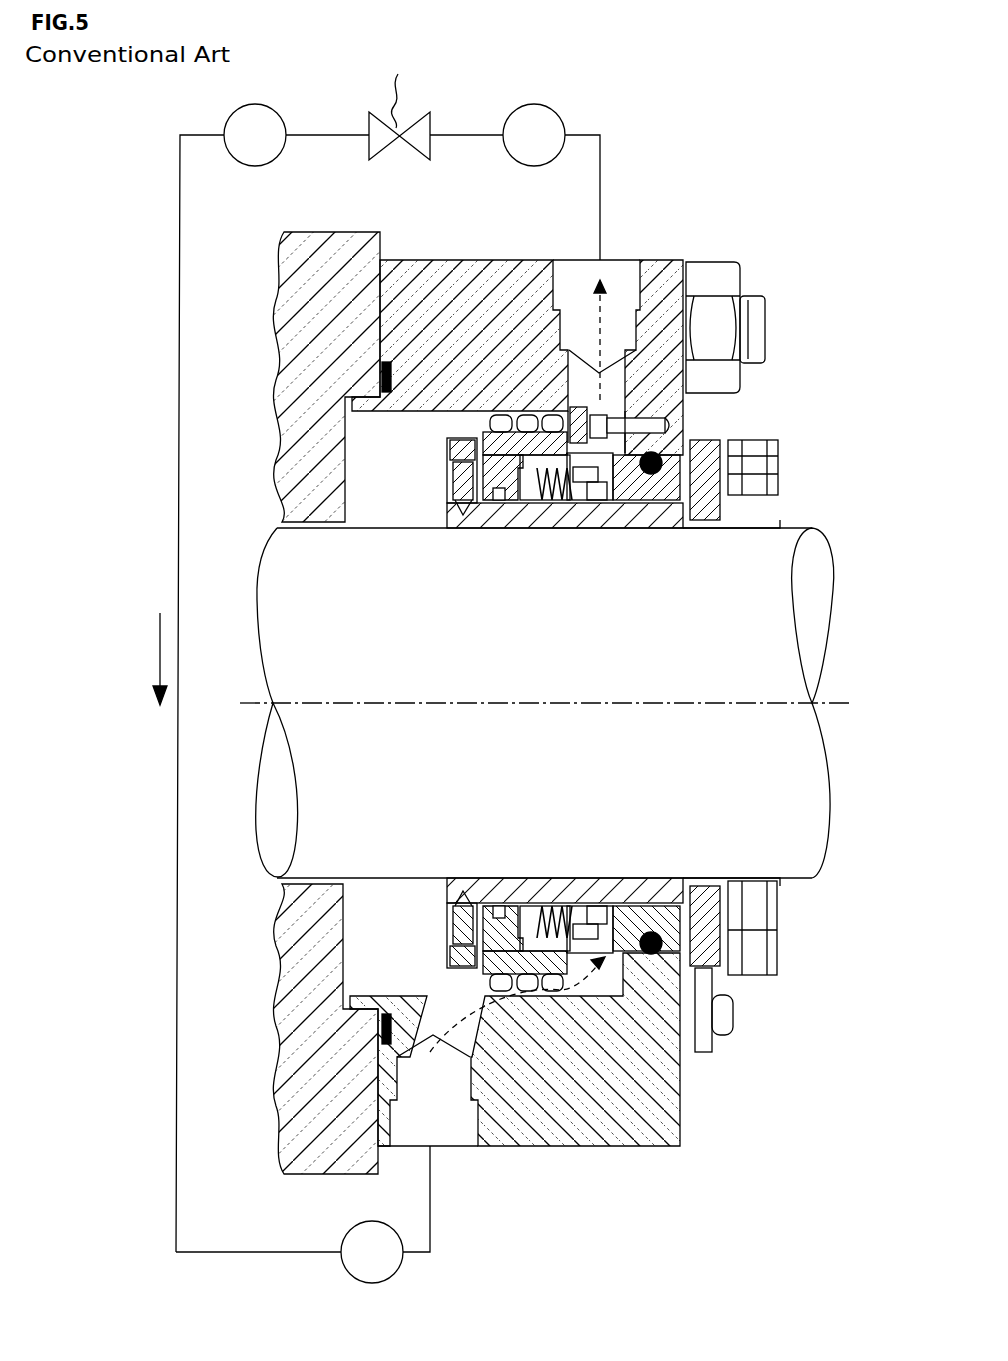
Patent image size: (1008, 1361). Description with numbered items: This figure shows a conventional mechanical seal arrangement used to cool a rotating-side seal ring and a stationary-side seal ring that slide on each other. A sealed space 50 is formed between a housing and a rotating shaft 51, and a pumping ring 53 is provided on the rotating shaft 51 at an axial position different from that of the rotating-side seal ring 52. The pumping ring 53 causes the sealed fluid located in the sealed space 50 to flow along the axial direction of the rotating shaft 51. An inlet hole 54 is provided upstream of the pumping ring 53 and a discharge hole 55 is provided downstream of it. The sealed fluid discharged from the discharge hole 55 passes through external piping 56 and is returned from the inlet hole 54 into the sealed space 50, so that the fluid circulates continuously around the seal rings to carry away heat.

The sealed space 50 is at (393, 483).
The rotating shaft 51 is at (736, 685).
The rotating-side seal ring 52 is at (592, 483).
The pumping ring 53 is at (480, 417).
The inlet hole 54 is at (515, 1147).
The discharge hole 55 is at (622, 380).
The external piping 56 is at (178, 515).